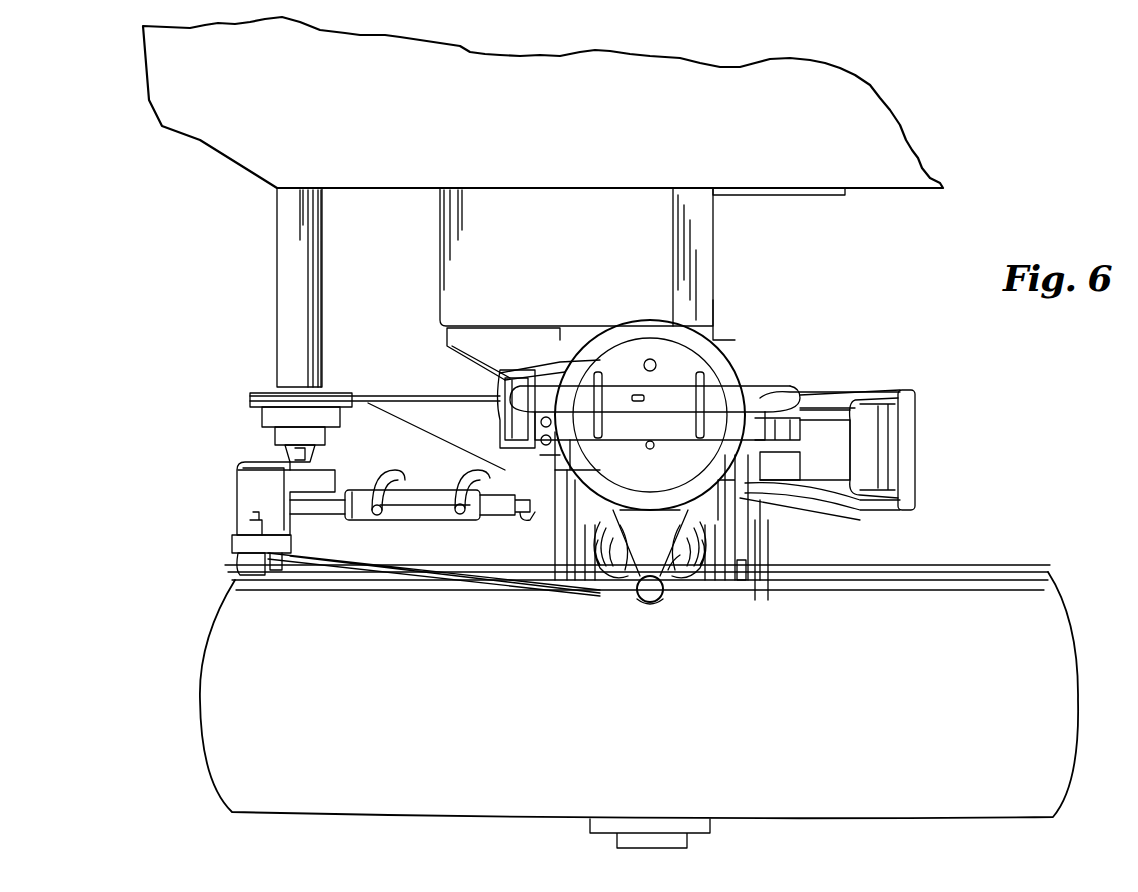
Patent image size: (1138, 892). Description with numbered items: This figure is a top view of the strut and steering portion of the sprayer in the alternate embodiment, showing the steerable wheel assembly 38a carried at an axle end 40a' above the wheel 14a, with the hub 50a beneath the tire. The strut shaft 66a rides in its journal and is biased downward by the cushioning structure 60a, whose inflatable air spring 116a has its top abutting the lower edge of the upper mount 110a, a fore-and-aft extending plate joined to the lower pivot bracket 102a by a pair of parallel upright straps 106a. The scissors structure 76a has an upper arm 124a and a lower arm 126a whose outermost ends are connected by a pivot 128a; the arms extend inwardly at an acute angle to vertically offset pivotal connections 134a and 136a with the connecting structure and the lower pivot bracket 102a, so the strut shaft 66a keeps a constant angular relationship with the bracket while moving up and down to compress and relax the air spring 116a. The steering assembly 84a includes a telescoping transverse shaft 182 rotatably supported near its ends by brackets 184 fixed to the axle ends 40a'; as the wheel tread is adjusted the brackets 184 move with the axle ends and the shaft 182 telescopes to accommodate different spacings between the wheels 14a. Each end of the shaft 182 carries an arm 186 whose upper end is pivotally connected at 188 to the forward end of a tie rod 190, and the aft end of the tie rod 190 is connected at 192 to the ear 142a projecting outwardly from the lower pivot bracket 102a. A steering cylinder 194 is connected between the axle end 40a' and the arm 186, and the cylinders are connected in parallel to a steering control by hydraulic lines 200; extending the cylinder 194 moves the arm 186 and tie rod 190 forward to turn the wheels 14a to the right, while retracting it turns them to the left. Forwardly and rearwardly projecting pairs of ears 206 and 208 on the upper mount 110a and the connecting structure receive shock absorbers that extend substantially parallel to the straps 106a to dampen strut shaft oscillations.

The wheel 14a is at (996, 820).
The steerable wheel assembly 38a is at (814, 328).
The axle end 40a' is at (757, 323).
The hub 50a is at (590, 829).
The cushioning structure 60a is at (729, 333).
The strut shaft 66a is at (630, 580).
The scissors structure 76a is at (905, 390).
The steering assembly 84a is at (234, 481).
The lower pivot bracket 102a is at (590, 575).
The strap 106a is at (850, 440).
The upper mount 110a is at (592, 375).
The air spring 116a is at (712, 585).
The upper arm 124a is at (838, 404).
The lower arm 126a is at (756, 526).
The pivot 128a is at (905, 510).
The pivotal connection 134a is at (780, 504).
The pivotal connection 136a is at (756, 590).
The ear 142a is at (688, 588).
The telescoping transverse shaft 182 is at (277, 276).
The bracket 184 is at (410, 396).
The arm 186 is at (252, 496).
The pivotal connection 188 is at (235, 555).
The tie rod 190 is at (438, 585).
The connection 192 is at (652, 597).
The steering cylinder 194 is at (416, 520).
The hydraulic line 200 is at (450, 480).
The ear 206 is at (560, 362).
The ear 208 is at (496, 440).